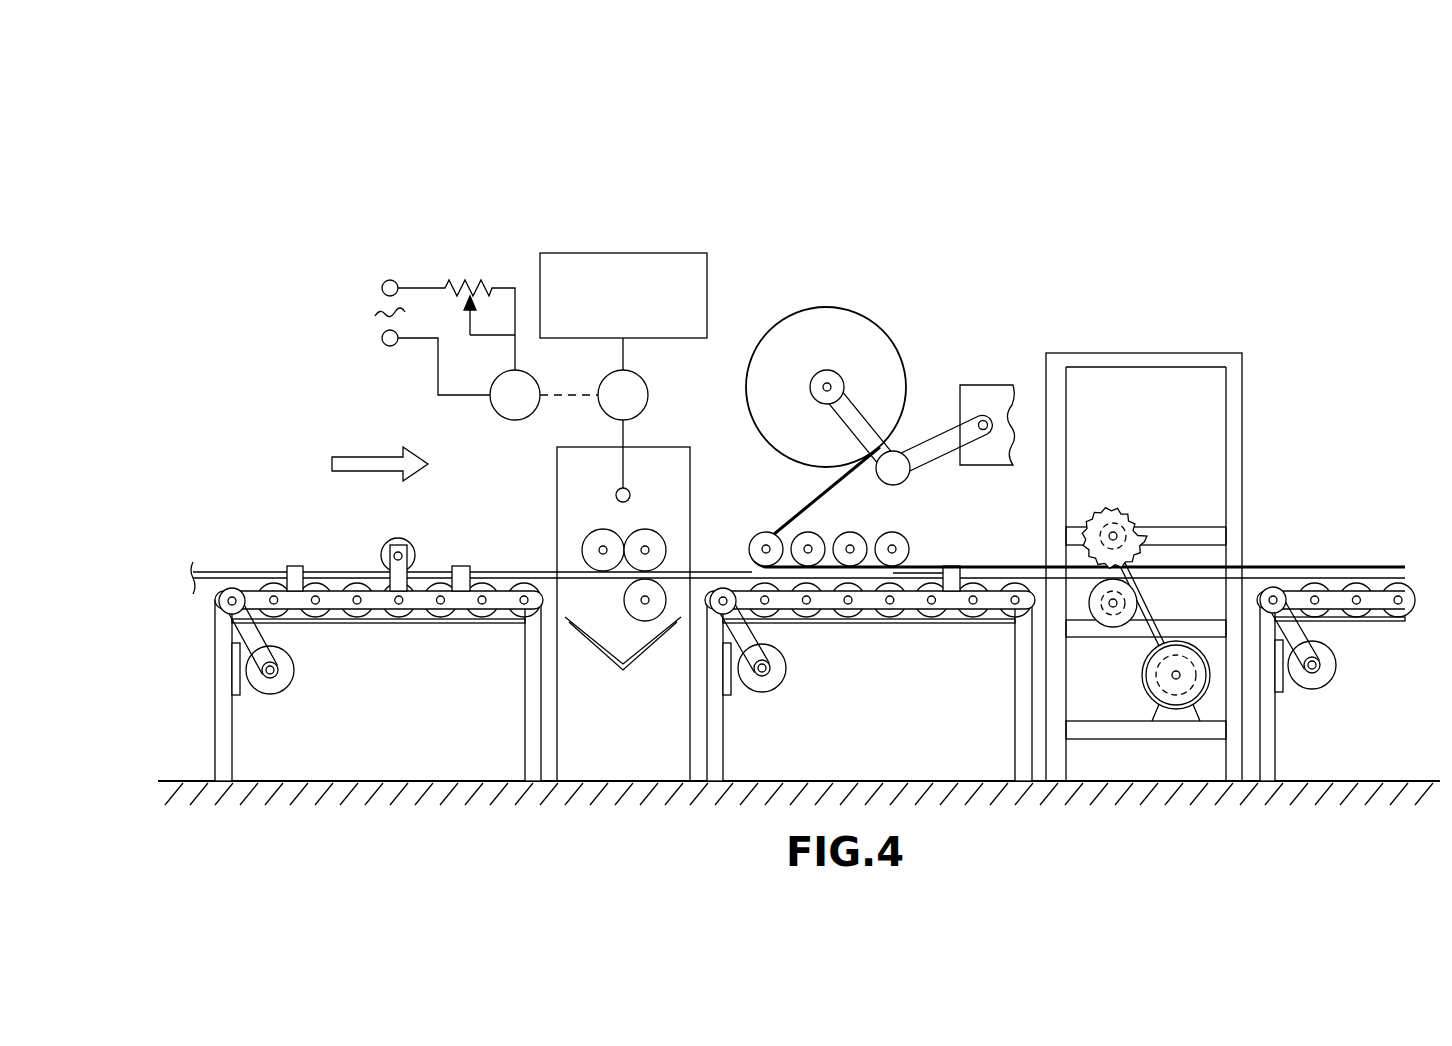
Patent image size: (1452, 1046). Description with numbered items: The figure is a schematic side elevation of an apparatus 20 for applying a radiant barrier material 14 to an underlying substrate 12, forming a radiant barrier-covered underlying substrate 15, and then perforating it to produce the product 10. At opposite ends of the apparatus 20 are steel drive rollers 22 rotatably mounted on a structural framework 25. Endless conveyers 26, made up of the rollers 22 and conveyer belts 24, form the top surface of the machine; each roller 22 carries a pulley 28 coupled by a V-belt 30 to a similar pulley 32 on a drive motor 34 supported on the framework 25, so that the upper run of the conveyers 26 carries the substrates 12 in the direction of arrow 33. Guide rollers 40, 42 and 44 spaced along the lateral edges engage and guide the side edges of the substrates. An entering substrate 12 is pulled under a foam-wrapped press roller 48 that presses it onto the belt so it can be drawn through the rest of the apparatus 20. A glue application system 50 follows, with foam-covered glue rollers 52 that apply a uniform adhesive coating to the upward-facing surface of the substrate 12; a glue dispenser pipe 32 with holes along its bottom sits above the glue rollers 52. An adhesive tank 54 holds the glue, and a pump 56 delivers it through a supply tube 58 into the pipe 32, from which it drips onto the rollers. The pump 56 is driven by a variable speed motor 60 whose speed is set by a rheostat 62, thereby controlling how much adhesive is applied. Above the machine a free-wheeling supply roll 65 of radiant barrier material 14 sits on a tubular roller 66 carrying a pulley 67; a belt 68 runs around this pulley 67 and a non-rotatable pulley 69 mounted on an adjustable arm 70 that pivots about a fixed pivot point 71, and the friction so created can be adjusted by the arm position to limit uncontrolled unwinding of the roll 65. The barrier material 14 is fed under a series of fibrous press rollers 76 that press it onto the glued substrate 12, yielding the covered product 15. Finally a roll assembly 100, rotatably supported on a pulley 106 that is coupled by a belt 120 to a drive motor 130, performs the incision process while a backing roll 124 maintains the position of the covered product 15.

The product 10 is at (1380, 560).
The underlying substrate 12 is at (351, 571).
The radiant barrier material 14 is at (788, 510).
The radiant barrier-covered underlying substrate 15 is at (926, 572).
The apparatus 20 is at (258, 385).
The drive rollers 22 is at (230, 586).
The conveyer belts 24 is at (468, 623).
The structural framework 25 is at (522, 737).
The endless conveyers 26 is at (796, 618).
The pulley 28 is at (213, 602).
The V-belt 30 is at (276, 637).
The pulley 32 is at (292, 676).
The arrow 33 is at (368, 454).
The drive motor 34 is at (271, 700).
The guide roller 40 is at (294, 565).
The guide roller 42 is at (462, 565).
The guide roller 44 is at (956, 566).
The press roller 48 is at (402, 539).
The glue application system 50 is at (646, 600).
The glue rollers 52 is at (646, 528).
The adhesive tank 54 is at (670, 252).
The pump 56 is at (650, 393).
The supply tube 58 is at (623, 437).
The variable speed motor 60 is at (516, 420).
The rheostat 62 is at (465, 280).
The supply roll 65 is at (883, 322).
The tubular roller 66 is at (821, 382).
The pulley 67 is at (836, 379).
The belt 68 is at (861, 412).
The non-rotatable pulley 69 is at (910, 482).
The adjustable arm 70 is at (941, 445).
The pivot point 71 is at (985, 385).
The press rollers 76 is at (884, 531).
The roll assembly 100 is at (1144, 567).
The pulley 106 is at (1108, 508).
The belt 120 is at (1138, 648).
The backing roll 124 is at (1139, 603).
The drive motor 130 is at (1144, 684).